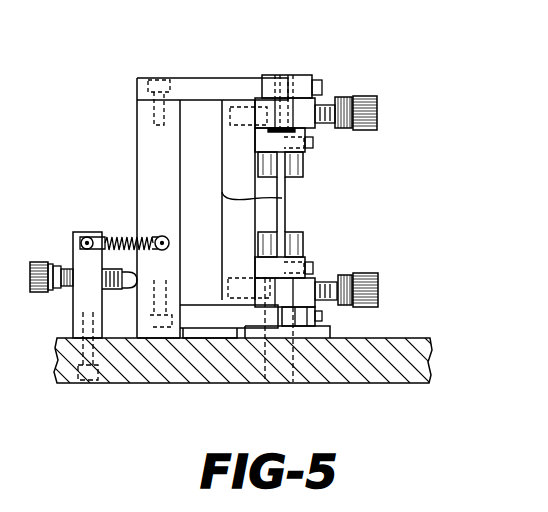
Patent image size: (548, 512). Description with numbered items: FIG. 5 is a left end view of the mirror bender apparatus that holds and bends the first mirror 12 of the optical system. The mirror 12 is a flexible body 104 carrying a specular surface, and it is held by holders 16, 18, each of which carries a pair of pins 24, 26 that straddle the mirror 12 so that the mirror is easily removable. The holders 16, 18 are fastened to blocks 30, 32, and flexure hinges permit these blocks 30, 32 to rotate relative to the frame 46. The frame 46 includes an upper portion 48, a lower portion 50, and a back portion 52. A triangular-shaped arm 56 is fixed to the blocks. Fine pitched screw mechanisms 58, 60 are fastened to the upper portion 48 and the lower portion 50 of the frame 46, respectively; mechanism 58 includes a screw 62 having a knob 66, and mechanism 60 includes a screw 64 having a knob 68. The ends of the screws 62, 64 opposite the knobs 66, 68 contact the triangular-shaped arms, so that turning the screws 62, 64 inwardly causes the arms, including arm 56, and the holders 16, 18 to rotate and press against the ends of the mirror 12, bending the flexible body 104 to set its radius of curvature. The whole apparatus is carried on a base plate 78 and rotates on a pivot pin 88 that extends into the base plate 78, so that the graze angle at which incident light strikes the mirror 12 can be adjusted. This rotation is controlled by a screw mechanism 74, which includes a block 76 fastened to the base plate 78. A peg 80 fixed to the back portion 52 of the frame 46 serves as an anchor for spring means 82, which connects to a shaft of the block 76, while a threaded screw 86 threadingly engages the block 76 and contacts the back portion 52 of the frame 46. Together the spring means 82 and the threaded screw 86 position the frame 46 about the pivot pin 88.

The first mirror 12 is at (319, 204).
The holder 16 is at (250, 140).
The holder 18 is at (302, 255).
The pair of pins 24 is at (300, 175).
The pair of pins 26 is at (296, 233).
The block 30 is at (288, 84).
The block 32 is at (295, 347).
The frame 46 is at (187, 186).
The upper portion 48 is at (212, 79).
The lower portion 50 is at (234, 348).
The back portion 52 is at (140, 208).
The triangular-shaped arm 56 is at (230, 200).
The fine pitched screw mechanism 58 is at (375, 268).
The fine pitched screw mechanism 60 is at (374, 104).
The screw 62 is at (362, 267).
The screw 64 is at (355, 90).
The knob 66 is at (394, 271).
The knob 68 is at (383, 109).
The screw mechanism 74 is at (82, 261).
The block 76 is at (62, 346).
The base plate 78 is at (247, 377).
The peg 80 is at (124, 223).
The spring means 82 is at (125, 208).
The threaded screw 86 is at (40, 258).
The pivot pin 88 is at (256, 347).
The flexible body 104 is at (234, 186).